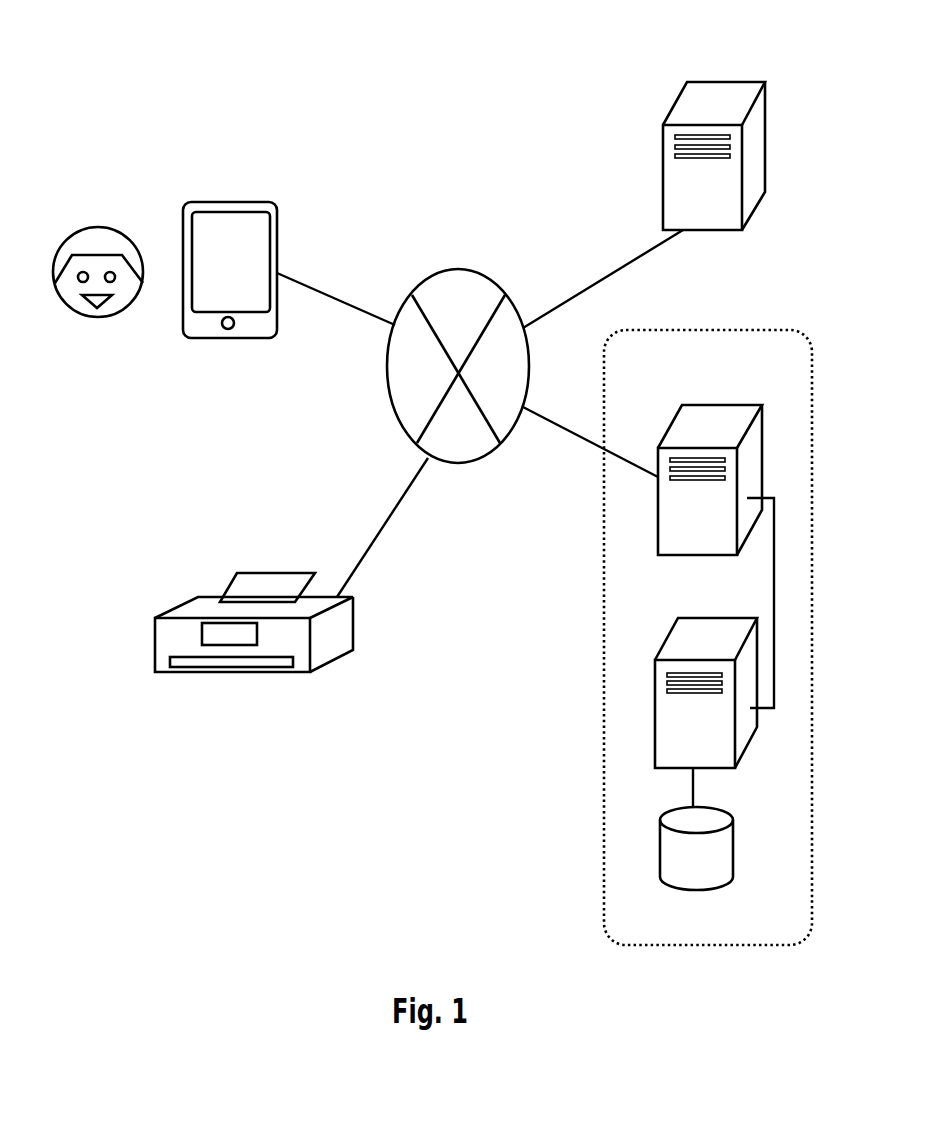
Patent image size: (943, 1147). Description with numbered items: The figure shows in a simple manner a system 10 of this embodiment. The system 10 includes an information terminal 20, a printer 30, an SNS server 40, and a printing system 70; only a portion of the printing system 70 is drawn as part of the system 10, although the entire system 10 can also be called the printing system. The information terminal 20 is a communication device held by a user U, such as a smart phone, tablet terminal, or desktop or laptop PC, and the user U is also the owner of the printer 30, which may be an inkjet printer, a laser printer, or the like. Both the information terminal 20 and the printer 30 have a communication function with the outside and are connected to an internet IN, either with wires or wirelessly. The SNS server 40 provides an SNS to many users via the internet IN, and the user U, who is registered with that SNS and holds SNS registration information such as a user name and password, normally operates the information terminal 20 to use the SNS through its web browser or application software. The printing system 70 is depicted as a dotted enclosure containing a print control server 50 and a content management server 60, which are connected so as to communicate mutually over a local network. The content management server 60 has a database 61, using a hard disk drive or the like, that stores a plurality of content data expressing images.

The system 10 is at (203, 75).
The user U is at (98, 289).
The information terminal 20 is at (240, 202).
The internet IN is at (462, 463).
The printer 30 is at (212, 597).
The SNS server 40 is at (727, 82).
The print control server 50 is at (705, 405).
The content management server 60 is at (708, 618).
The database 61 is at (733, 833).
The printing system 70 is at (708, 637).